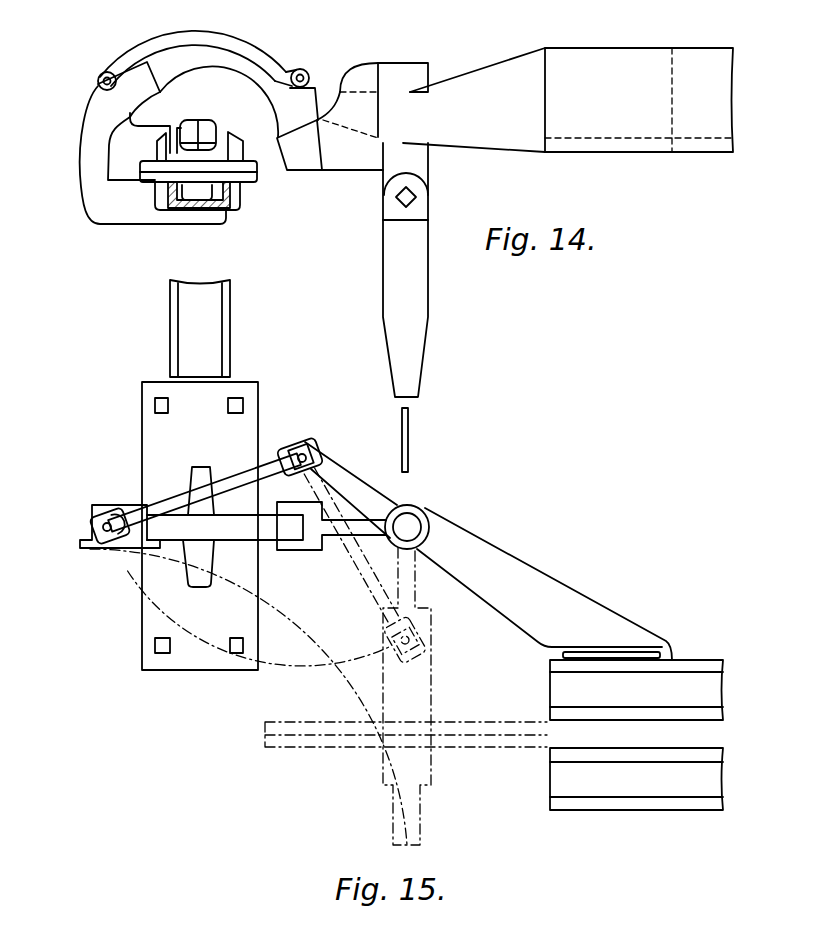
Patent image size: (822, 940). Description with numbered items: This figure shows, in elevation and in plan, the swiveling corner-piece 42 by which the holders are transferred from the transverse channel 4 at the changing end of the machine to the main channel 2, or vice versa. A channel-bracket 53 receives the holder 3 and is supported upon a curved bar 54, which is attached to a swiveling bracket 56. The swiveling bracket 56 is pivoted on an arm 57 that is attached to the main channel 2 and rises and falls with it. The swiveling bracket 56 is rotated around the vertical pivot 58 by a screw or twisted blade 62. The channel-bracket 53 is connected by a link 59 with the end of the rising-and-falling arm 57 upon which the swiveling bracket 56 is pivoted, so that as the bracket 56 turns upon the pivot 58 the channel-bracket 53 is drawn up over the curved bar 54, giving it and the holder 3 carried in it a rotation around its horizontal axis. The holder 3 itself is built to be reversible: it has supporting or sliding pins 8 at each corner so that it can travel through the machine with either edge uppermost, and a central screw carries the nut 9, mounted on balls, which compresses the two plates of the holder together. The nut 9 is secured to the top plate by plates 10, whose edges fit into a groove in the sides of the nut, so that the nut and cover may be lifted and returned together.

In FIG. 14, the main channel 2 is at (639, 100).
In FIG. 15, the main channel 2 is at (636, 735).
In FIG. 14, the holder 3 is at (207, 178).
In FIG. 15, the holder 3 is at (344, 564).
In FIG. 15, the transverse channel 4 is at (200, 328).
In FIG. 14, the supporting or sliding pins 8 is at (196, 178).
In FIG. 15, the supporting or sliding pins 8 is at (199, 525).
In FIG. 14, the nut 9 is at (206, 122).
In FIG. 15, the plates 10 is at (198, 527).
In FIG. 14, the swiveling corner-piece 42 is at (129, 143).
In FIG. 15, the swiveling corner-piece 42 is at (100, 526).
In FIG. 14, the channel-bracket 53 is at (213, 232).
In FIG. 15, the channel-bracket 53 is at (248, 697).
In FIG. 14, the curved bar 54 is at (193, 107).
In FIG. 15, the curved bar 54 is at (308, 679).
In FIG. 14, the swiveling bracket 56 is at (330, 145).
In FIG. 15, the swiveling bracket 56 is at (331, 539).
In FIG. 14, the arm 57 is at (325, 105).
In FIG. 15, the arm 57 is at (488, 551).
In FIG. 14, the pivot 58 is at (403, 84).
In FIG. 15, the pivot 58 is at (405, 528).
In FIG. 14, the link 59 is at (237, 60).
In FIG. 15, the link 59 is at (168, 503).
In FIG. 14, the screw or twisted blade 62 is at (405, 307).